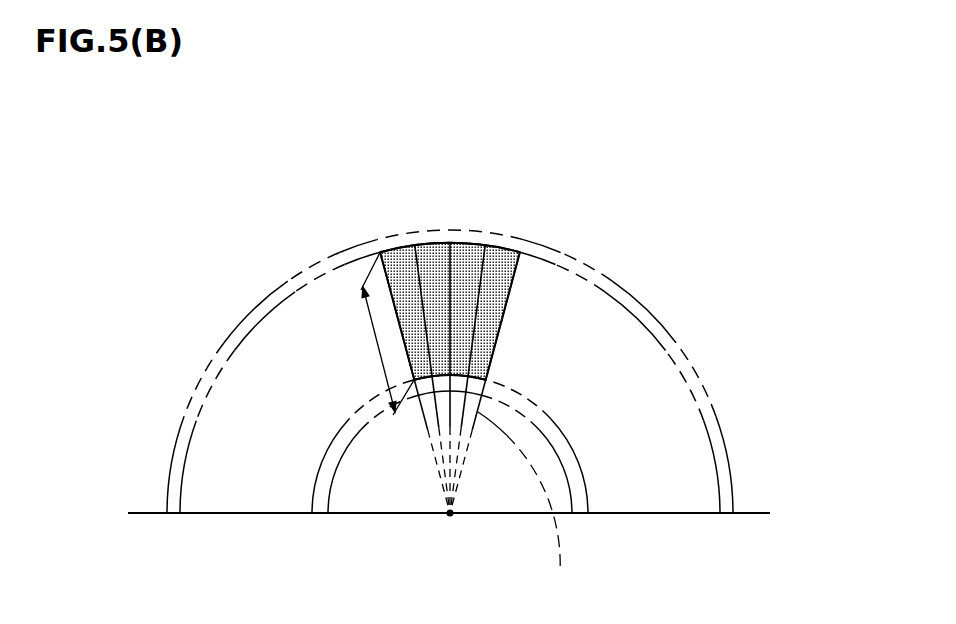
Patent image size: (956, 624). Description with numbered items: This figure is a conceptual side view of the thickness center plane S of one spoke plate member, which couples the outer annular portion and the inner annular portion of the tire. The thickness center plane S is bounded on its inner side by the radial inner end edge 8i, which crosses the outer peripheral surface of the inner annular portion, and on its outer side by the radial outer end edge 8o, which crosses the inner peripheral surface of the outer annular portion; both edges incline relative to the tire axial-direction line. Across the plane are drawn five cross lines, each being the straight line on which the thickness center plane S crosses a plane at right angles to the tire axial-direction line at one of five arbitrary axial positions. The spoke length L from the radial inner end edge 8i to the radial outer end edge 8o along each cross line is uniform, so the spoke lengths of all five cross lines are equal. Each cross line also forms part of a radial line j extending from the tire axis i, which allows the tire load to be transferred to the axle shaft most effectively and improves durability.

The radial outer end edge 8o is at (443, 243).
The radial inner end edge 8i is at (441, 386).
The spoke length L is at (379, 349).
The thickness center plane S is at (500, 326).
The tire axis i is at (450, 516).
The radial line j is at (520, 509).